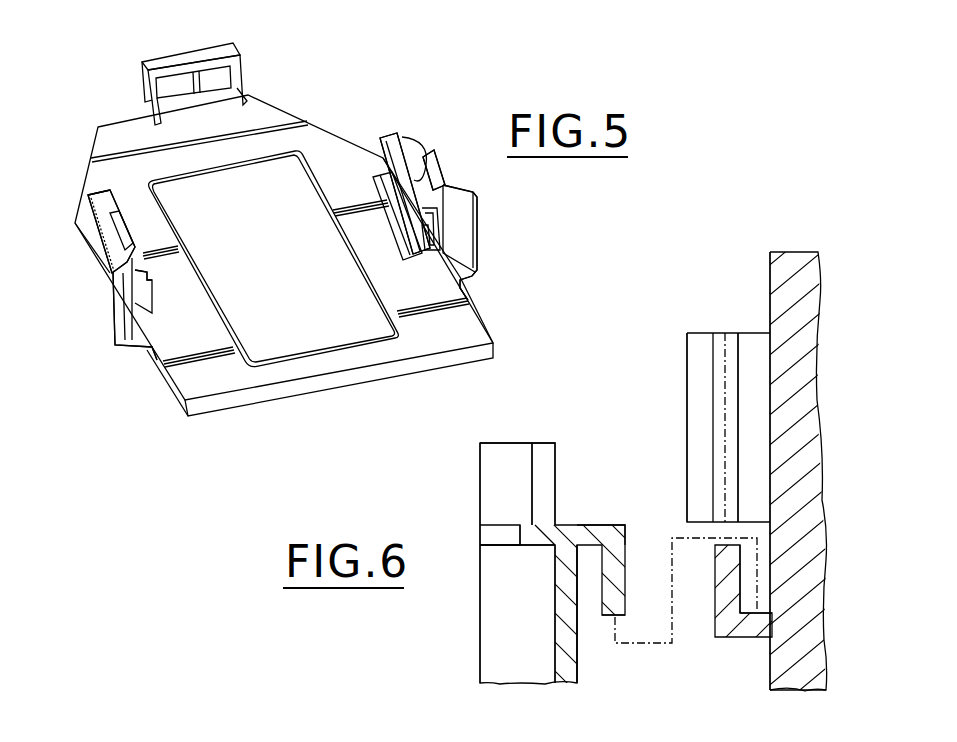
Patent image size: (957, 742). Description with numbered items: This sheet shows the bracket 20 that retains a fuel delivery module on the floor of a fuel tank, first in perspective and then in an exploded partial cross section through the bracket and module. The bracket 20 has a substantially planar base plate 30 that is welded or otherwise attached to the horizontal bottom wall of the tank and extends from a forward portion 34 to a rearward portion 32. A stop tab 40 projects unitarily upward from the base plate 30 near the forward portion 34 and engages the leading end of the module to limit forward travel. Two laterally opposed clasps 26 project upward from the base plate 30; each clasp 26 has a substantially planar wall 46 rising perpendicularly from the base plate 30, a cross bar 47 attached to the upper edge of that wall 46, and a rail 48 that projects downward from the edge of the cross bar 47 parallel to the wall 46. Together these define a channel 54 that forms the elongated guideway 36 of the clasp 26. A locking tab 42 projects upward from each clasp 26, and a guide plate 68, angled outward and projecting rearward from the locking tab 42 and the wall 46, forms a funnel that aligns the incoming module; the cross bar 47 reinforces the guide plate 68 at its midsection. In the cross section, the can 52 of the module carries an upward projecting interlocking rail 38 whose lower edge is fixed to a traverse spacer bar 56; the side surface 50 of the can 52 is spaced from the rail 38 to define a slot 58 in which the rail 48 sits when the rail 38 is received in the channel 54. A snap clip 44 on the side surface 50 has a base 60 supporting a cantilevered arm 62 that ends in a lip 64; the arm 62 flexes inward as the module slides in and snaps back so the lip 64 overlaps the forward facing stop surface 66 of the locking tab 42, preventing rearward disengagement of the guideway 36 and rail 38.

In FIG. 5, the bracket 20 is at (406, 71).
In FIG. 5, the clasp 26 is at (98, 275).
In FIG. 6, the clasp 26 is at (474, 565).
In FIG. 5, the base plate 30 is at (327, 143).
In FIG. 5, the rearward portion 32 is at (472, 315).
In FIG. 5, the forward portion 34 is at (262, 110).
In FIG. 5, the guideway 36 is at (158, 273).
In FIG. 6, the guideway 36 is at (630, 568).
In FIG. 6, the interlocking rail 38 is at (722, 585).
In FIG. 5, the stop tab 40 is at (172, 58).
In FIG. 5, the locking tab 42 is at (113, 242).
In FIG. 6, the locking tab 42 is at (545, 443).
In FIG. 6, the snap clip 44 is at (684, 326).
In FIG. 5, the wall 46 is at (422, 227).
In FIG. 6, the wall 46 is at (567, 635).
In FIG. 5, the cross bar 47 is at (100, 193).
In FIG. 6, the cross bar 47 is at (497, 527).
In FIG. 6, the rail 48 is at (618, 605).
In FIG. 6, the side surface 50 is at (768, 273).
In FIG. 6, the can 52 is at (800, 257).
In FIG. 6, the channel 54 is at (590, 597).
In FIG. 6, the spacer bar 56 is at (777, 593).
In FIG. 6, the slot 58 is at (760, 560).
In FIG. 6, the base 60 is at (752, 343).
In FIG. 6, the cantilevered arm 62 is at (728, 332).
In FIG. 6, the lip 64 is at (695, 352).
In FIG. 6, the stop surface 66 is at (550, 472).
In FIG. 5, the guide plate 68 is at (125, 293).
In FIG. 6, the guide plate 68 is at (483, 501).